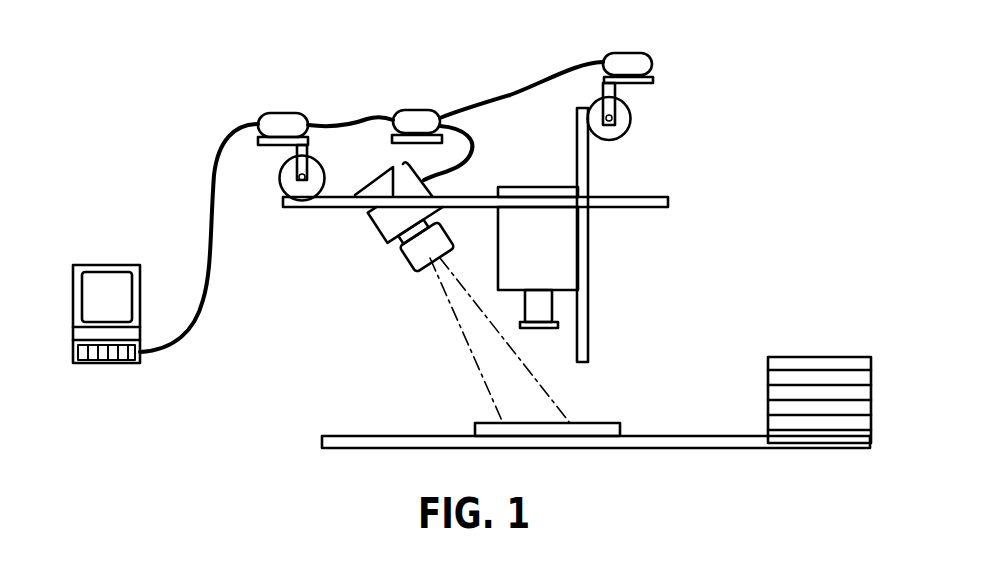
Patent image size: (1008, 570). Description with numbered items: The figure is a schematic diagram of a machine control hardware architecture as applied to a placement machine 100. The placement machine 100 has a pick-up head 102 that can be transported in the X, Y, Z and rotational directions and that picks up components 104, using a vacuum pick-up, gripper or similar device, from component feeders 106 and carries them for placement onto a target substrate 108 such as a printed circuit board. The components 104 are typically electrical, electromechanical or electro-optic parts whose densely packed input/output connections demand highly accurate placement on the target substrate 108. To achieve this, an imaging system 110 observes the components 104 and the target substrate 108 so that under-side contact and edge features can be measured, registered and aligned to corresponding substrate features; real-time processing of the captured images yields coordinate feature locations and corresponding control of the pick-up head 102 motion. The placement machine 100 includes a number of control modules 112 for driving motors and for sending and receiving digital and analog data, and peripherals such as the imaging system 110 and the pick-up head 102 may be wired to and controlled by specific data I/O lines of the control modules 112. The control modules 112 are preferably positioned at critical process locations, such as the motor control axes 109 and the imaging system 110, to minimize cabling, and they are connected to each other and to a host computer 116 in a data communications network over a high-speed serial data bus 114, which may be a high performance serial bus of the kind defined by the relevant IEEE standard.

The placement machine 100 is at (207, 60).
The pick-up head 102 is at (534, 186).
The components 104 is at (553, 305).
The component feeders 106 is at (768, 382).
The target substrate 108 is at (607, 422).
The motor control axes 109 is at (280, 178).
The imaging system 110 is at (378, 234).
The control modules 112 is at (279, 116).
The high-speed serial data bus 114 is at (345, 118).
The host computer 116 is at (92, 297).